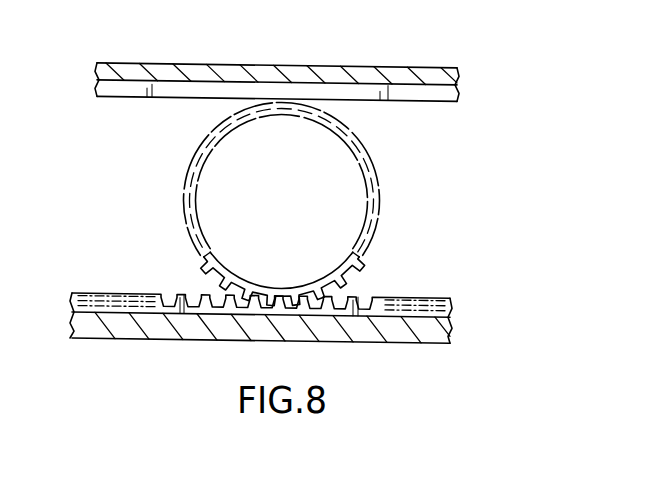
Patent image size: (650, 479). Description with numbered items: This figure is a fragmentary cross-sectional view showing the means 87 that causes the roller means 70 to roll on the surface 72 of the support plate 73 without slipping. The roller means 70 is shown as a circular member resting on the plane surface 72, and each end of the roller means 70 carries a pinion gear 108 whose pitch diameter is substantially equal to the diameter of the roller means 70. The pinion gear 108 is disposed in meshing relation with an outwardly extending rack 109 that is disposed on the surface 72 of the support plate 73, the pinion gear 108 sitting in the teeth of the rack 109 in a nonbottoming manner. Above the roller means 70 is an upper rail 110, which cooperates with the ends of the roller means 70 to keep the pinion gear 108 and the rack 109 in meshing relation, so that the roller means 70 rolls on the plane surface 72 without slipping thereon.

The means 87 is at (412, 52).
The upper rail 110 is at (163, 62).
The roller means 70 is at (364, 163).
The pinion gear 108 is at (203, 252).
The rack 109 is at (190, 292).
The surface 72 is at (365, 293).
The support plate 73 is at (437, 330).